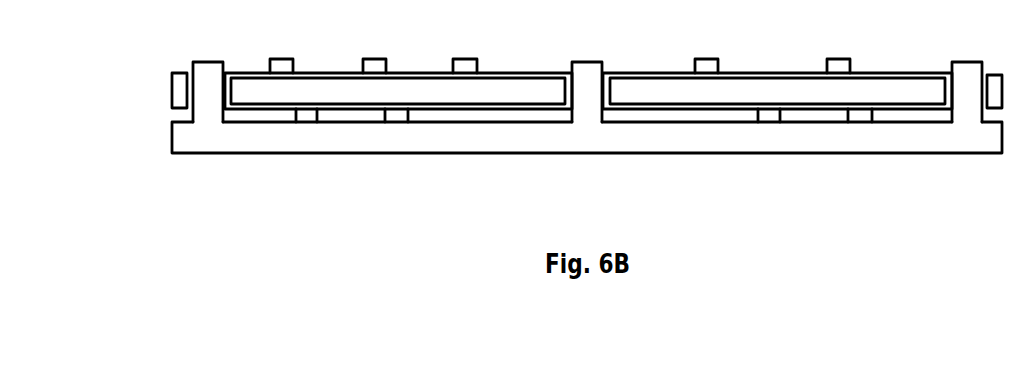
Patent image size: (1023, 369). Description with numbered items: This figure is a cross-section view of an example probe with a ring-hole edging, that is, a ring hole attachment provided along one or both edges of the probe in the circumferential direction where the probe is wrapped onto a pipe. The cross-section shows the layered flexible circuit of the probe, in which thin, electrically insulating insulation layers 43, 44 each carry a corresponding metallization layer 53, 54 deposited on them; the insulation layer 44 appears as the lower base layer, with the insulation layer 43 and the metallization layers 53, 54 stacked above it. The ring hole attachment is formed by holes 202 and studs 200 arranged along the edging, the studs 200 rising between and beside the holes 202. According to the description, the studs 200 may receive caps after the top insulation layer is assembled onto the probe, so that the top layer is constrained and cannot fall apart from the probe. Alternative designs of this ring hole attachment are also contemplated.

The insulation layer 43 is at (180, 88).
The insulation layer 44 is at (182, 133).
The metallization layer 53 is at (373, 68).
The metallization layer 54 is at (307, 113).
The stud 200 is at (215, 70).
The hole 202 is at (226, 74).